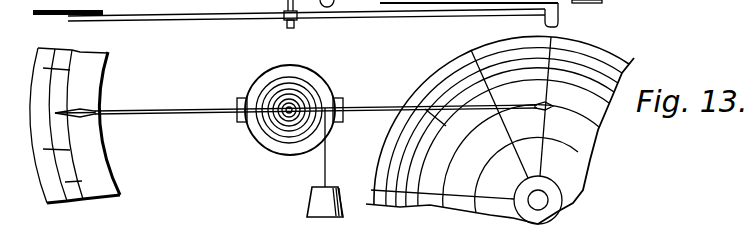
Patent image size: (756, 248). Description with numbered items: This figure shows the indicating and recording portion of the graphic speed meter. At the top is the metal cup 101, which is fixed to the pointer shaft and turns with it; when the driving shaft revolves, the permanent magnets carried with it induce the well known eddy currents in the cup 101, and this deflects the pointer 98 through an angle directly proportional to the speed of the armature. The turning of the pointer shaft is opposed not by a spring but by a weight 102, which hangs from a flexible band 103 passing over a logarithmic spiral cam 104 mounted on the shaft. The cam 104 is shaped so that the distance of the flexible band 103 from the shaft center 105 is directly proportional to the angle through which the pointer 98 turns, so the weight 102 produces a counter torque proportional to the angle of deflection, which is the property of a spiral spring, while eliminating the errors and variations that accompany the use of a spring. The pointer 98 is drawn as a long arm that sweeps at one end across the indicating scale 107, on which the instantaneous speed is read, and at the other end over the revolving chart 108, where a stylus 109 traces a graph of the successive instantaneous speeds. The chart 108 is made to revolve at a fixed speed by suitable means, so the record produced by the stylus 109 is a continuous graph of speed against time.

The pointer 98 is at (200, 19).
The metal cup 101 is at (317, 14).
The weight 102 is at (307, 208).
The flexible band 103 is at (326, 152).
The logarithmic spiral cam 104 is at (312, 87).
The shaft center 105 is at (284, 113).
The indicating scale 107 is at (97, 164).
The revolving chart 108 is at (563, 180).
The stylus 109 is at (533, 111).